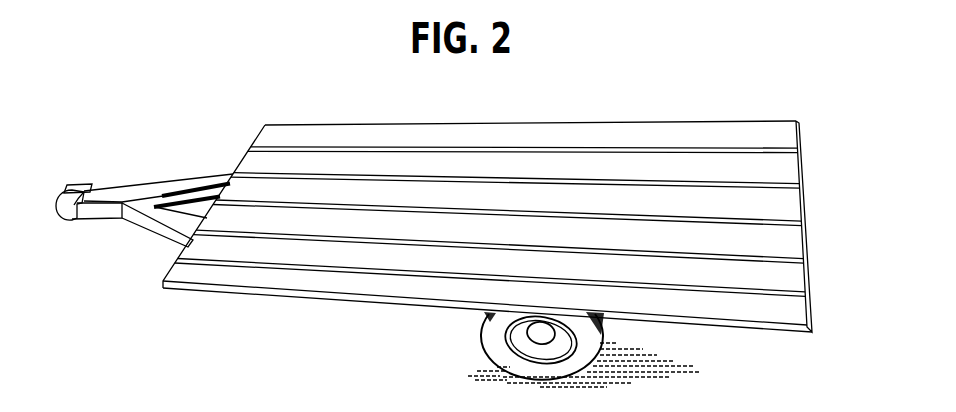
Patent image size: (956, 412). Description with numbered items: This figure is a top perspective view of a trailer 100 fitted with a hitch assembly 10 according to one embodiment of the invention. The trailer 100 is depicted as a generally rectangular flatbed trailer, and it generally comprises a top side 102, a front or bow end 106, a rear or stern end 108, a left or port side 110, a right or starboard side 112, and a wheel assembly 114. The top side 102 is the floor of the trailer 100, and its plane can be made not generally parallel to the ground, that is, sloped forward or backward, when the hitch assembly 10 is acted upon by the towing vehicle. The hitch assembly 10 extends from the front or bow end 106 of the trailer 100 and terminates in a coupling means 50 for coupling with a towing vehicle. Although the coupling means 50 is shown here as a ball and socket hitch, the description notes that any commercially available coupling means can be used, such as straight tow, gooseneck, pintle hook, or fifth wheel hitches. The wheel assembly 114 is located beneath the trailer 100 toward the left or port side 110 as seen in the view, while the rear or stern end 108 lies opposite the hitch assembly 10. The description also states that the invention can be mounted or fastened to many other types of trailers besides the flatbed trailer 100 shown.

The trailer 100 is at (586, 105).
The top side 102 is at (681, 200).
The right or starboard side 112 is at (468, 122).
The front or bow end 106 is at (172, 265).
The rear or stern end 108 is at (806, 240).
The left or port side 110 is at (392, 306).
The wheel assembly 114 is at (503, 379).
The hitch assembly 10 is at (120, 183).
The coupling means 50 is at (63, 193).